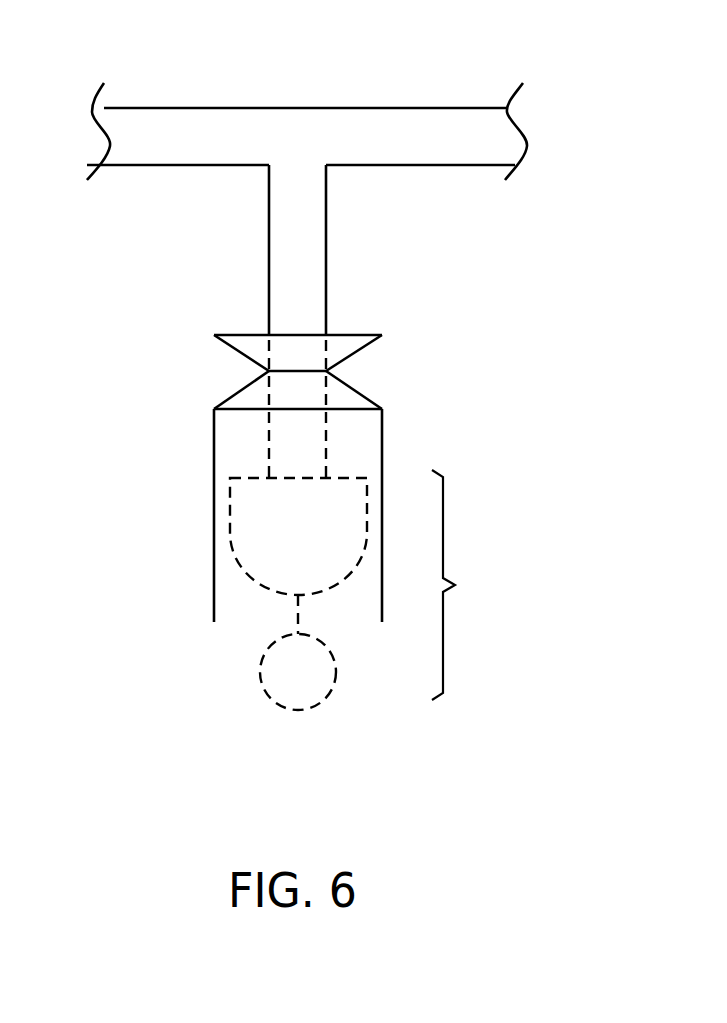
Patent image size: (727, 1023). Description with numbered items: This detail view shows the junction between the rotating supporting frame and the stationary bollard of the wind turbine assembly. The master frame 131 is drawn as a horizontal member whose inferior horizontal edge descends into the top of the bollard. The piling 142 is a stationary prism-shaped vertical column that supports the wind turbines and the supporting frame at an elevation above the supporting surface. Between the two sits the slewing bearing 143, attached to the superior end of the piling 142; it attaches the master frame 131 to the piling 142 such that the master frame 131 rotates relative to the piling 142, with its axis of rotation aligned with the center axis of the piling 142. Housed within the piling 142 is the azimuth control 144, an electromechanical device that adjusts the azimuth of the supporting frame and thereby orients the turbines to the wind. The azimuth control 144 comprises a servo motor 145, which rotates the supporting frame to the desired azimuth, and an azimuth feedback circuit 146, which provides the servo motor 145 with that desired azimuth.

The master frame 131 is at (395, 125).
The piling 142 is at (382, 441).
The slewing bearing 143 is at (360, 385).
The azimuth control 144 is at (473, 585).
The servo motor 145 is at (252, 518).
The azimuth feedback circuit 146 is at (262, 674).